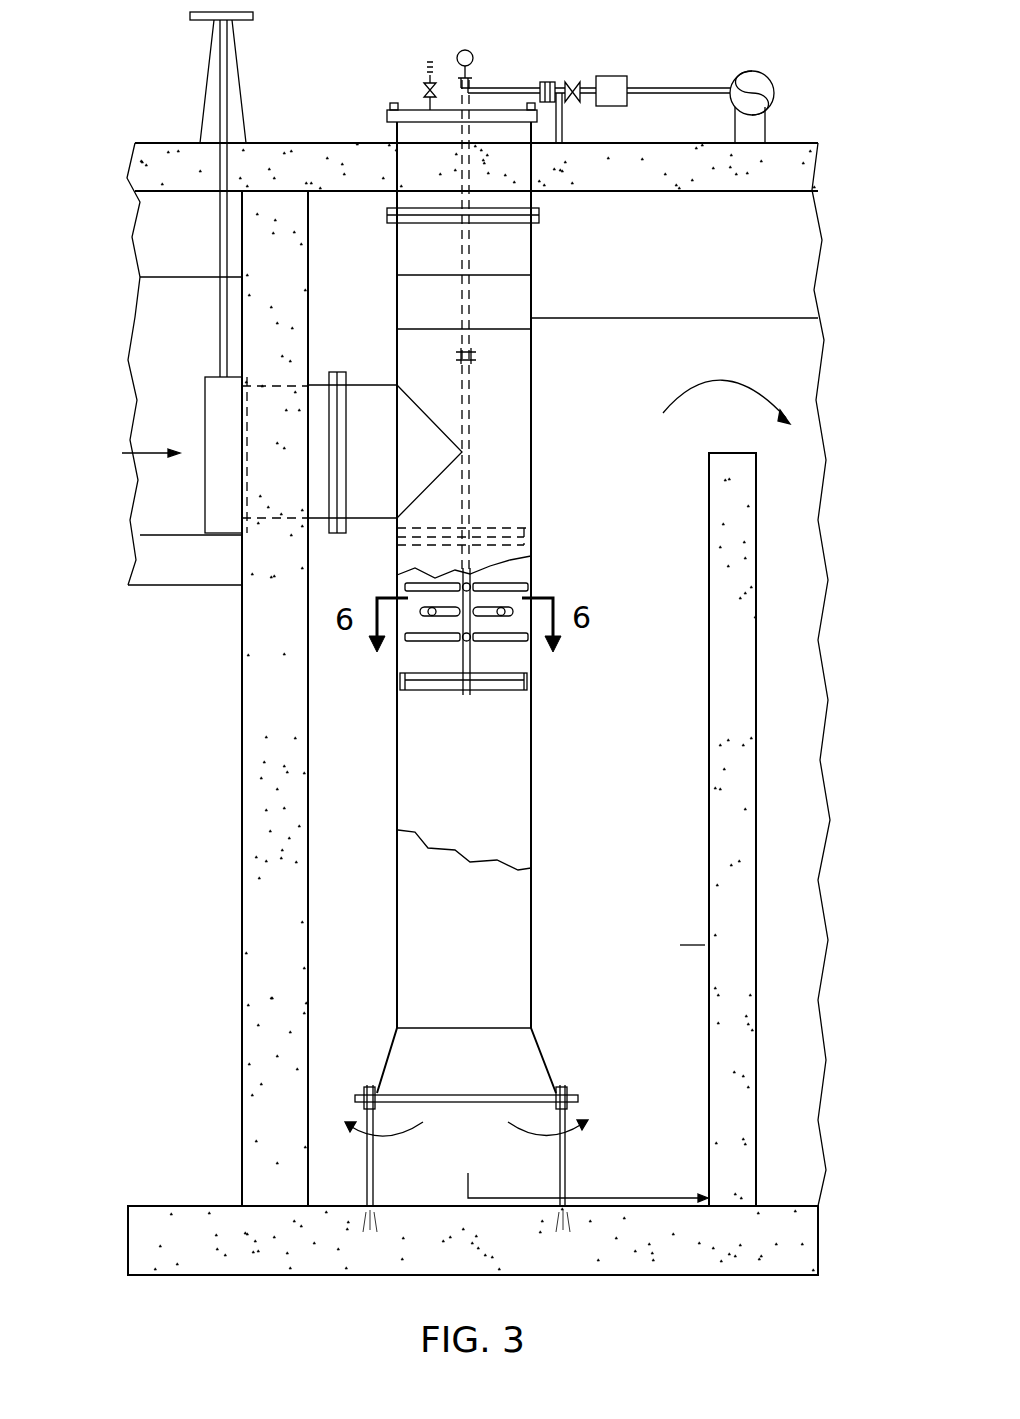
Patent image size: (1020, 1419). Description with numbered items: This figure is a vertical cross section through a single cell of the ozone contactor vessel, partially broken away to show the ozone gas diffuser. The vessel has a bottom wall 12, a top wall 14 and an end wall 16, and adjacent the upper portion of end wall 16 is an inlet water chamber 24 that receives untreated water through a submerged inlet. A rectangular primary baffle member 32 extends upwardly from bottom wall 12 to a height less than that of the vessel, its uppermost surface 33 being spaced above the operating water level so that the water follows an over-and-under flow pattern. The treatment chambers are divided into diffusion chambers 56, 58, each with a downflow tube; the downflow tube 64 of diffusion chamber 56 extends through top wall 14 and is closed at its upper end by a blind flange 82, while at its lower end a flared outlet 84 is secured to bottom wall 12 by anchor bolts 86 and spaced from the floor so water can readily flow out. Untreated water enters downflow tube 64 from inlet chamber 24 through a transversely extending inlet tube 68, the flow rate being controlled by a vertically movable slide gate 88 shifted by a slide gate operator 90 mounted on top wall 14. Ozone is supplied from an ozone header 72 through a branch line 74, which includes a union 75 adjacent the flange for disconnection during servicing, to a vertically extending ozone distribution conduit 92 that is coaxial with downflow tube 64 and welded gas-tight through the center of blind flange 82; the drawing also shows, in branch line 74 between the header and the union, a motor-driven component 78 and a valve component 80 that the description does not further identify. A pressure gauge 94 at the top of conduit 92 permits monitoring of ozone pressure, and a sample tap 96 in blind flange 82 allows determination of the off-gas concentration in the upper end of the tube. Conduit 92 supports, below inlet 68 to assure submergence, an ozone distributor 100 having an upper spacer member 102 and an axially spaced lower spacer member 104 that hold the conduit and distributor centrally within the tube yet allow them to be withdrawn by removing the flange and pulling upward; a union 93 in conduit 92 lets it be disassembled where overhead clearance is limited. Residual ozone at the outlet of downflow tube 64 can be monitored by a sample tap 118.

The bottom wall 12 is at (812, 1240).
The top wall 14 is at (272, 147).
The end wall 16 is at (245, 772).
The inlet water chamber 24 is at (146, 307).
The primary baffle member 32 is at (752, 812).
The uppermost surface 33 is at (730, 452).
The diffusion chamber 56 is at (705, 945).
The diffusion chamber 58 is at (812, 860).
The downflow tube 64 is at (537, 783).
The inlet tube 68 is at (365, 533).
The ozone header 72 is at (778, 82).
The branch line 74 is at (697, 88).
The union 75 is at (546, 80).
The motor 78 is at (620, 76).
The valve 80 is at (573, 80).
The blind flange 82 is at (441, 108).
The flared outlet 84 is at (540, 1040).
The anchor bolts 86 is at (370, 1160).
The slide gate 88 is at (205, 508).
The slide gate operator 90 is at (212, 73).
The ozone distribution conduit 92 is at (472, 245).
The union 93 is at (478, 356).
The pressure gauge 94 is at (470, 52).
The sample tap 96 is at (428, 75).
The ozone distributor 100 is at (571, 532).
The upper spacer member 102 is at (502, 528).
The lower spacer member 104 is at (497, 680).
The sample tap 118 is at (470, 1178).